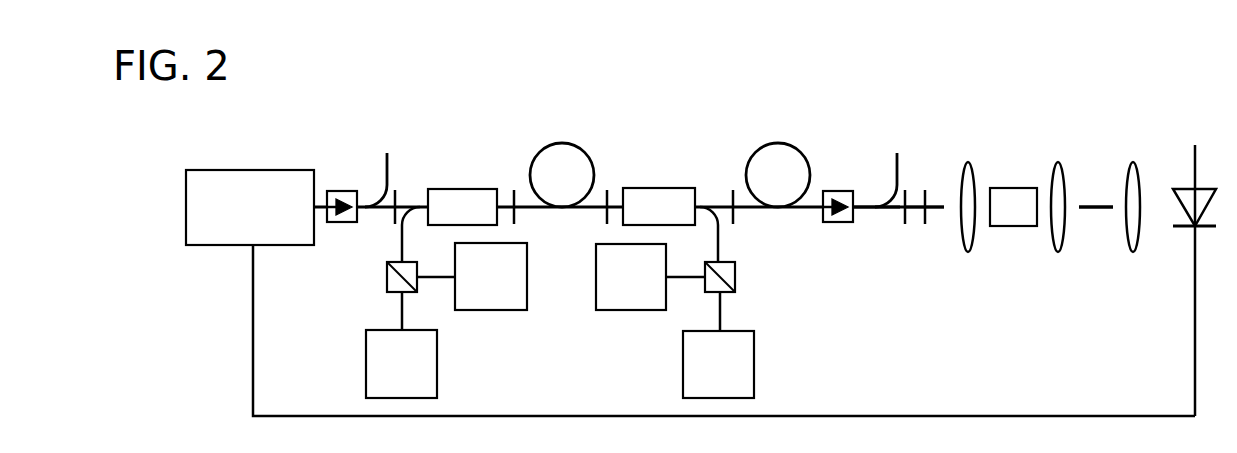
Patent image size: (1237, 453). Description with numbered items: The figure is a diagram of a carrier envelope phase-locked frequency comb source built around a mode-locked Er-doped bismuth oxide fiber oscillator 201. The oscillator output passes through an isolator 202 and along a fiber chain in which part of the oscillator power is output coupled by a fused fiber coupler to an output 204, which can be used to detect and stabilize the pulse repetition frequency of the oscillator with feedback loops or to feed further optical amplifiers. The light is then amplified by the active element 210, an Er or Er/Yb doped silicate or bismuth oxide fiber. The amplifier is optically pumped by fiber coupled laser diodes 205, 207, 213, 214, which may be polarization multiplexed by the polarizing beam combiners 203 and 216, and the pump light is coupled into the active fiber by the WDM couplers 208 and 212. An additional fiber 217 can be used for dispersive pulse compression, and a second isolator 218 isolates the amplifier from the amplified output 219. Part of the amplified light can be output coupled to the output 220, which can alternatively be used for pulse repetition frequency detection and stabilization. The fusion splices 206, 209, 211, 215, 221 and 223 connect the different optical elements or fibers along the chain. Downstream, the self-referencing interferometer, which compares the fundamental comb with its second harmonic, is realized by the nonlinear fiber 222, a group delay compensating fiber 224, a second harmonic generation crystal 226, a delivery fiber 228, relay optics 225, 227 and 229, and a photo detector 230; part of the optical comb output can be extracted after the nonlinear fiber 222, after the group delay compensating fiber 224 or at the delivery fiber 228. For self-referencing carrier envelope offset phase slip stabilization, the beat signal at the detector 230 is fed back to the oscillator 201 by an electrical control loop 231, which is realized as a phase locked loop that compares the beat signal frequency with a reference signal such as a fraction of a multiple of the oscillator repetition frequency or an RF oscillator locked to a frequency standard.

The fiber oscillator 201 is at (277, 170).
The isolator 202 is at (342, 222).
The polarizing beam combiner 203 is at (386, 276).
The output 204 is at (385, 156).
The fiber coupled laser diode 205 is at (366, 350).
The fusion splice 206 is at (395, 191).
The fiber coupled laser diode 207 is at (467, 310).
The WDM coupler 208 is at (463, 189).
The fusion splice 209 is at (514, 214).
The active element 210 is at (565, 143).
The fusion splice 211 is at (607, 190).
The WDM coupler 212 is at (680, 188).
The fiber coupled laser diode 213 is at (612, 310).
The fiber coupled laser diode 214 is at (683, 360).
The fusion splice 215 is at (733, 214).
The polarizing beam combiner 216 is at (735, 281).
The additional fiber 217 is at (776, 143).
The isolator 218 is at (836, 222).
The amplified output 219 is at (860, 210).
The output 220 is at (893, 156).
The fusion splice 221 is at (905, 225).
The nonlinear fiber 222 is at (914, 200).
The fusion splice 223 is at (926, 225).
The group delay compensating fiber 224 is at (936, 200).
The relay optics 225 is at (968, 252).
The second harmonic generation crystal 226 is at (1013, 226).
The relay optics 227 is at (1058, 252).
The delivery fiber 228 is at (1097, 210).
The relay optics 229 is at (1133, 252).
The photo detector 230 is at (1193, 150).
The electrical control loop 231 is at (960, 415).